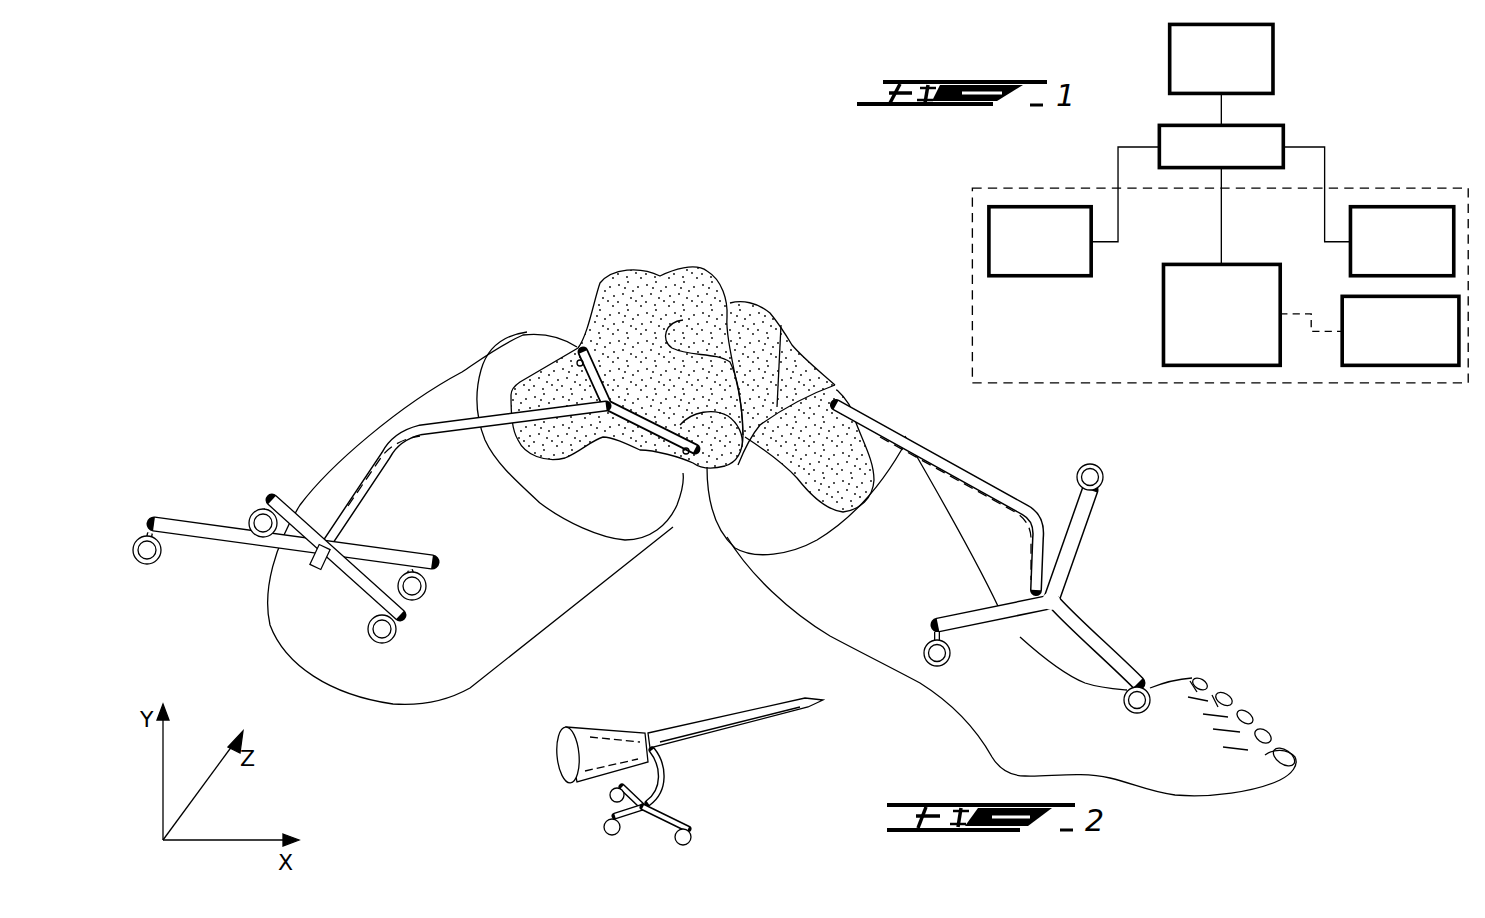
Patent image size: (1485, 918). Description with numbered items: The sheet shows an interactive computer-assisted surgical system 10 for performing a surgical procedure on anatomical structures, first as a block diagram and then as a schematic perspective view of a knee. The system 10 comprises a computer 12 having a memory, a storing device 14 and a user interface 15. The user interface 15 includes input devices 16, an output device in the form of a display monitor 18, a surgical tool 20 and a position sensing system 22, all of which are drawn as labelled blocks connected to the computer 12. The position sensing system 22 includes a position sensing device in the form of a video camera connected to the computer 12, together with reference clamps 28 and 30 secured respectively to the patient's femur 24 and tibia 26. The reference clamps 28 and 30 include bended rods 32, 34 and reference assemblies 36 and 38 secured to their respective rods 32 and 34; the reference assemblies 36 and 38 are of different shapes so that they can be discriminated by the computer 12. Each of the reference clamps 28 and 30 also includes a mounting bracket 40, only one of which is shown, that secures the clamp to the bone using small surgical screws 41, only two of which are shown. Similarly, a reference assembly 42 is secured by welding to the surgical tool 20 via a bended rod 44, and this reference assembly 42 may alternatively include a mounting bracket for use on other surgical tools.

In FIG. 1, the interactive computer-assisted surgical system 10 is at (915, 167).
In FIG. 1, the computer 12 is at (1268, 127).
In FIG. 1, the storing device 14 is at (1263, 62).
In FIG. 1, the user interface 15 is at (987, 291).
In FIG. 1, the input devices 16 is at (1040, 268).
In FIG. 1, the display monitor 18 is at (1398, 201).
In FIG. 1, the surgical tool 20 is at (1352, 345).
In FIG. 2, the surgical tool 20 is at (684, 763).
In FIG. 1, the position sensing system 22 is at (1213, 355).
In FIG. 2, the femur 24 is at (647, 283).
In FIG. 2, the tibia 26 is at (760, 330).
In FIG. 2, the reference clamp 28 is at (466, 426).
In FIG. 2, the reference clamp 30 is at (947, 472).
In FIG. 2, the bended rod 32 is at (457, 432).
In FIG. 2, the bended rod 34 is at (1013, 498).
In FIG. 2, the reference assembly 36 is at (346, 558).
In FIG. 2, the reference assembly 38 is at (1050, 607).
In FIG. 2, the mounting bracket 40 is at (599, 410).
In FIG. 2, the surgical screws 41 is at (580, 360).
In FIG. 2, the reference assembly 42 is at (630, 813).
In FIG. 2, the bended rod 44 is at (660, 773).